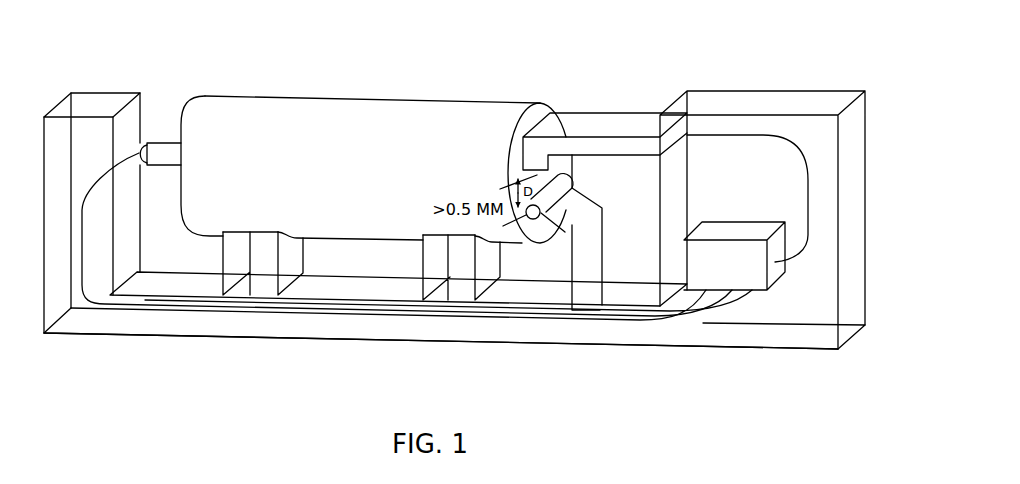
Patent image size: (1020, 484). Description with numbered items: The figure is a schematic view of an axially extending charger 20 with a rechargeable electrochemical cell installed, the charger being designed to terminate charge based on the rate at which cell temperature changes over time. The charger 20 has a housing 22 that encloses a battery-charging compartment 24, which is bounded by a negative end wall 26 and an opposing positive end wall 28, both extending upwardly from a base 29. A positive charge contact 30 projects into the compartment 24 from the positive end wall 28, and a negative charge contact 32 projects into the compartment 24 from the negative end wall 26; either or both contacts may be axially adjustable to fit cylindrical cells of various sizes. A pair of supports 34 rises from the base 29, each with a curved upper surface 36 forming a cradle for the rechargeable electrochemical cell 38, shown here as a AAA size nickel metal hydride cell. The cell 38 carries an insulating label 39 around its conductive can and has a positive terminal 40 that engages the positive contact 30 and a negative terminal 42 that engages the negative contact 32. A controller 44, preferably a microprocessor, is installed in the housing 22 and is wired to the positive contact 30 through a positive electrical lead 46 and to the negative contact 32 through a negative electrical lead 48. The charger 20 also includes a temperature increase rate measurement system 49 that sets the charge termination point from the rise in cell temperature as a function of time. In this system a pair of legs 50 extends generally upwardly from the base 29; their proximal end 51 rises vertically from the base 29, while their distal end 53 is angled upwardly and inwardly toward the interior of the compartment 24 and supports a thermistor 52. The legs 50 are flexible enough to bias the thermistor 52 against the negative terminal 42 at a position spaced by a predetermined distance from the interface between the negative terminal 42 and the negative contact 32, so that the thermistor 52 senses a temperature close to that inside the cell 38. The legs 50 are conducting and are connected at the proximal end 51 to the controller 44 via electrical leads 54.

The charger 20 is at (762, 52).
The housing 22 is at (868, 173).
The battery-charging compartment 24 is at (171, 62).
The negative end wall 26 is at (658, 276).
The positive end wall 28 is at (140, 183).
The base 29 is at (343, 288).
The positive charge contact 30 is at (145, 138).
The negative charge contact 32 is at (615, 120).
The supports 34 is at (224, 262).
The curved upper surface 36 is at (292, 233).
The rechargeable electrochemical cell 38 is at (348, 111).
The insulating label 39 is at (277, 97).
The positive terminal 40 is at (162, 143).
The negative terminal 42 is at (540, 108).
The controller 44 is at (772, 285).
The positive electrical lead 46 is at (92, 300).
The negative electrical lead 48 is at (793, 152).
The temperature increase rate measurement system 49 is at (626, 203).
The legs 50 is at (568, 268).
The proximal end 51 is at (598, 265).
The thermistor 52 is at (555, 203).
The distal end 53 is at (590, 213).
The electrical leads 54 is at (663, 307).